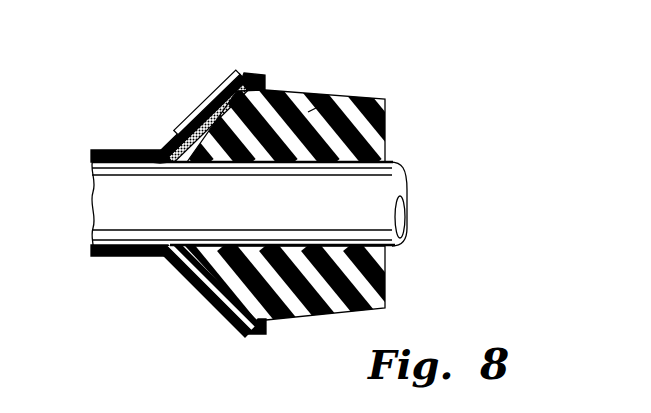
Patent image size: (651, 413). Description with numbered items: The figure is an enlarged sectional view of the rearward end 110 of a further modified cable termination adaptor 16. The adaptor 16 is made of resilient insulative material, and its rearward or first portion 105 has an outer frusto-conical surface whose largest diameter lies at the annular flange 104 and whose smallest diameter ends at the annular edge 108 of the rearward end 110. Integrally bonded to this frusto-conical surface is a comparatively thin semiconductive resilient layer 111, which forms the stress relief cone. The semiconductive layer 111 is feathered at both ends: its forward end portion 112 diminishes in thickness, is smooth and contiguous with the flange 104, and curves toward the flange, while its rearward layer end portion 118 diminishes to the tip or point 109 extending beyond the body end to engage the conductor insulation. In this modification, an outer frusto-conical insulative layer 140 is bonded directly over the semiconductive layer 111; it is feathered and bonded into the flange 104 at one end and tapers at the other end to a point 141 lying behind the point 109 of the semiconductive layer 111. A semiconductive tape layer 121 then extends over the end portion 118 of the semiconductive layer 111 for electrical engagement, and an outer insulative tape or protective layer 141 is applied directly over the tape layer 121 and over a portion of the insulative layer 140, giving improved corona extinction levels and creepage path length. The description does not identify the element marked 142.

The cable termination adaptor 16 is at (326, 96).
The annular flange 104 is at (252, 80).
The rearward or first portion 105 is at (236, 166).
The annular edge 108 is at (182, 163).
The tip or point 109 is at (163, 158).
The rearward end 110 is at (194, 168).
The semiconductive resilient layer 111 is at (238, 116).
The end portion of the semiconductive layer 112 is at (281, 94).
The layer end portion 118 is at (172, 158).
The semiconductive tape layer 121 is at (103, 148).
The outer frusto-conical insulative layer 140 is at (240, 82).
The outer insulative tape or protective layer 141 is at (181, 124).
The band end 142 is at (160, 150).